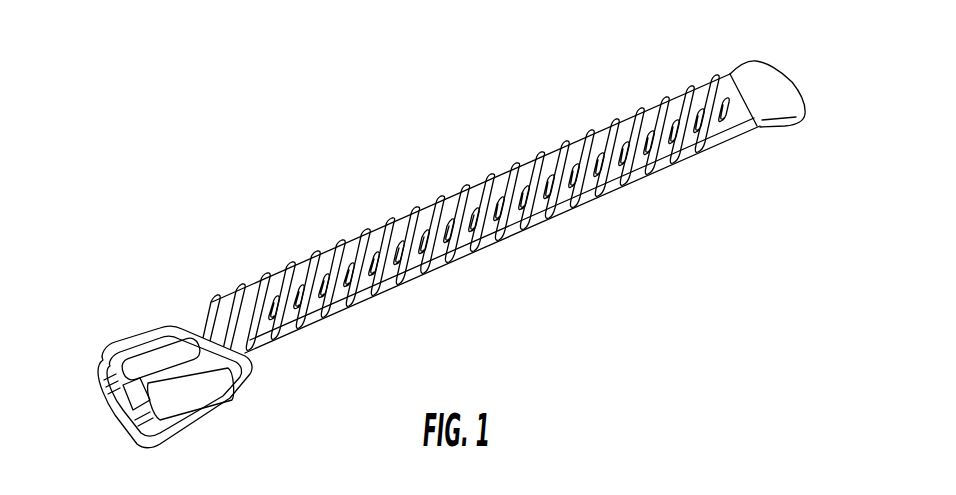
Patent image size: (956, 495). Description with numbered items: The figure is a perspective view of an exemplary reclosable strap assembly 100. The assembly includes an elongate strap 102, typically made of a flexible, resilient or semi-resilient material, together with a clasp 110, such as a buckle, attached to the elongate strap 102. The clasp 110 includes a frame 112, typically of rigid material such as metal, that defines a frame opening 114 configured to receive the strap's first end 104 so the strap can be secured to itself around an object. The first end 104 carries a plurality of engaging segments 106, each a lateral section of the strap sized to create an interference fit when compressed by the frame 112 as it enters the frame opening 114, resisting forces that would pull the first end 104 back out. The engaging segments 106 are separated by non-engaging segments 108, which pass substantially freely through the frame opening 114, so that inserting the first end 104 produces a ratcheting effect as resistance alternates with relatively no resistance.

The reclosable strap assembly 100 is at (153, 127).
The elongate strap 102 is at (425, 275).
The first end 104 is at (701, 181).
The engaging segments 106 is at (612, 128).
The non-engaging segments 108 is at (385, 222).
The clasp 110 is at (122, 476).
The frame 112 is at (108, 342).
The frame opening 114 is at (177, 401).